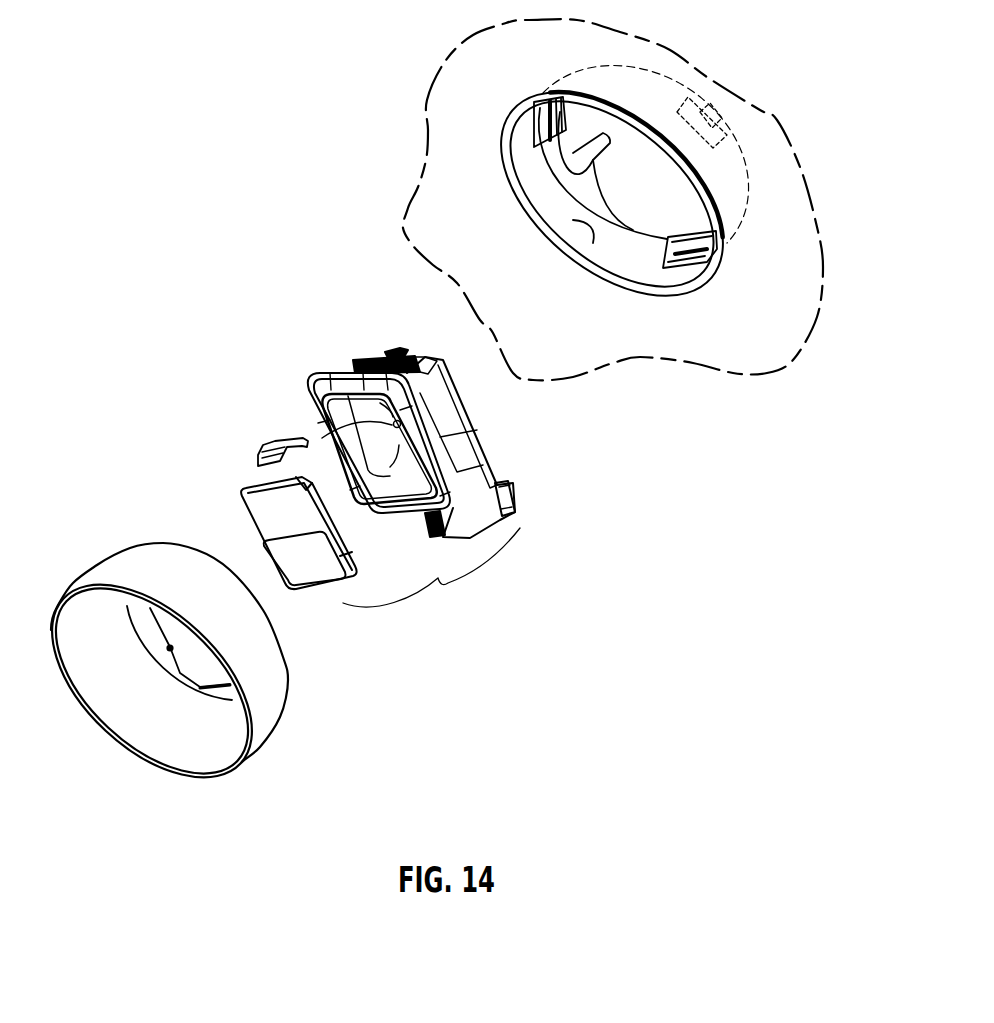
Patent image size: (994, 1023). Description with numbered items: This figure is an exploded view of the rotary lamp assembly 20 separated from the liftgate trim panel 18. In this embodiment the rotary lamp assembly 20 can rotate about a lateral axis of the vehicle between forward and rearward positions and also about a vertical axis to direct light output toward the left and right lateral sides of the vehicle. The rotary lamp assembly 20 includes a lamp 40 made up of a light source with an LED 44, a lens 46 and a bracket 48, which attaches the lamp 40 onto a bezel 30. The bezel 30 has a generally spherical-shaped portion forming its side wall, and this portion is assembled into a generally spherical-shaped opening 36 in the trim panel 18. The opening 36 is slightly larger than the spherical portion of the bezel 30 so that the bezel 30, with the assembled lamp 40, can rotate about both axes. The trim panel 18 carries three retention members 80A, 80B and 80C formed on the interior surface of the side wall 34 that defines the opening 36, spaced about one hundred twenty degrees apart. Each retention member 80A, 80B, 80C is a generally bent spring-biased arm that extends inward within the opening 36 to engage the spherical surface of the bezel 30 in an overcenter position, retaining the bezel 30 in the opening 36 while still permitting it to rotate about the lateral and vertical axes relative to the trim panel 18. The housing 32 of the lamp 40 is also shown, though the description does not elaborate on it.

The trim panel 18 is at (753, 333).
The rotary lamp assembly 20 is at (203, 243).
The bezel 30 is at (263, 692).
The housing 32 is at (481, 462).
The side wall 34 is at (593, 238).
The opening 36 is at (663, 193).
The lamp 40 is at (431, 573).
The LED 44 is at (314, 429).
The lens 46 is at (268, 502).
The bracket 48 is at (262, 446).
The retention member 80A is at (666, 238).
The retention member 80B is at (536, 128).
The retention member 80C is at (732, 90).